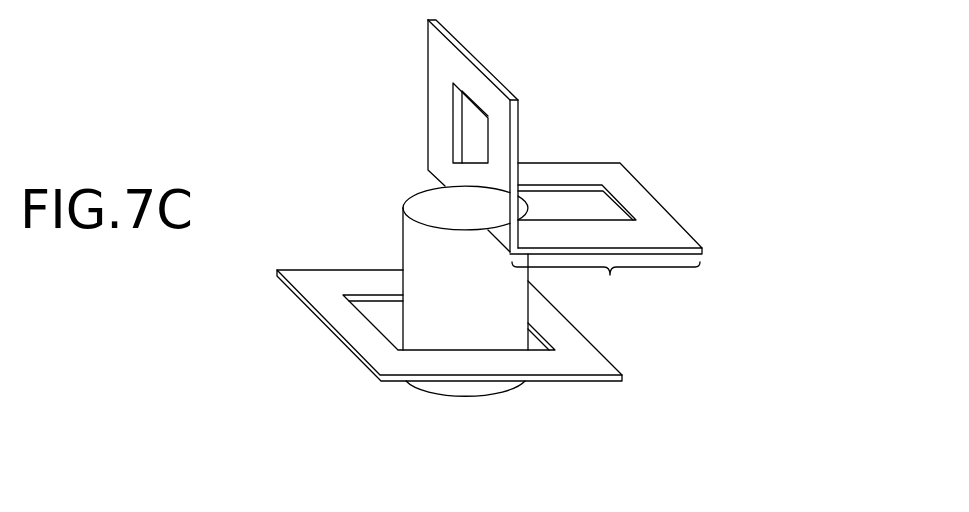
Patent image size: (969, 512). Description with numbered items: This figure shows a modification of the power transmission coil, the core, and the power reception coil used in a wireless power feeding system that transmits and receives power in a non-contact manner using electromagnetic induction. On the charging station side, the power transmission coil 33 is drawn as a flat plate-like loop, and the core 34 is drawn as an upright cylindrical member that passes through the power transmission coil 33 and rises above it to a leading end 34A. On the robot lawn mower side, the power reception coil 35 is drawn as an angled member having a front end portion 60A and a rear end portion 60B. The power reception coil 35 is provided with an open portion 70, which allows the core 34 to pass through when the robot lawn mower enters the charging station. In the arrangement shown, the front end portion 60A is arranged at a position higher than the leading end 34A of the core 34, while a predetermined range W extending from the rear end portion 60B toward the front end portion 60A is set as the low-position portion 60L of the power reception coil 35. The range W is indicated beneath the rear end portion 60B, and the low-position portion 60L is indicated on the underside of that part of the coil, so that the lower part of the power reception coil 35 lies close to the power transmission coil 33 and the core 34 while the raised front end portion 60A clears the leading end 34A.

The open portion 70 is at (417, 144).
The power transmission coil 33 is at (330, 316).
The core 34 is at (403, 255).
The leading end of the core 34A is at (421, 200).
The power reception coil 35 is at (558, 163).
The front end portion 60A is at (484, 66).
The rear end portion 60B is at (638, 195).
The low-position portion 60L is at (651, 256).
The predetermined range W is at (606, 286).